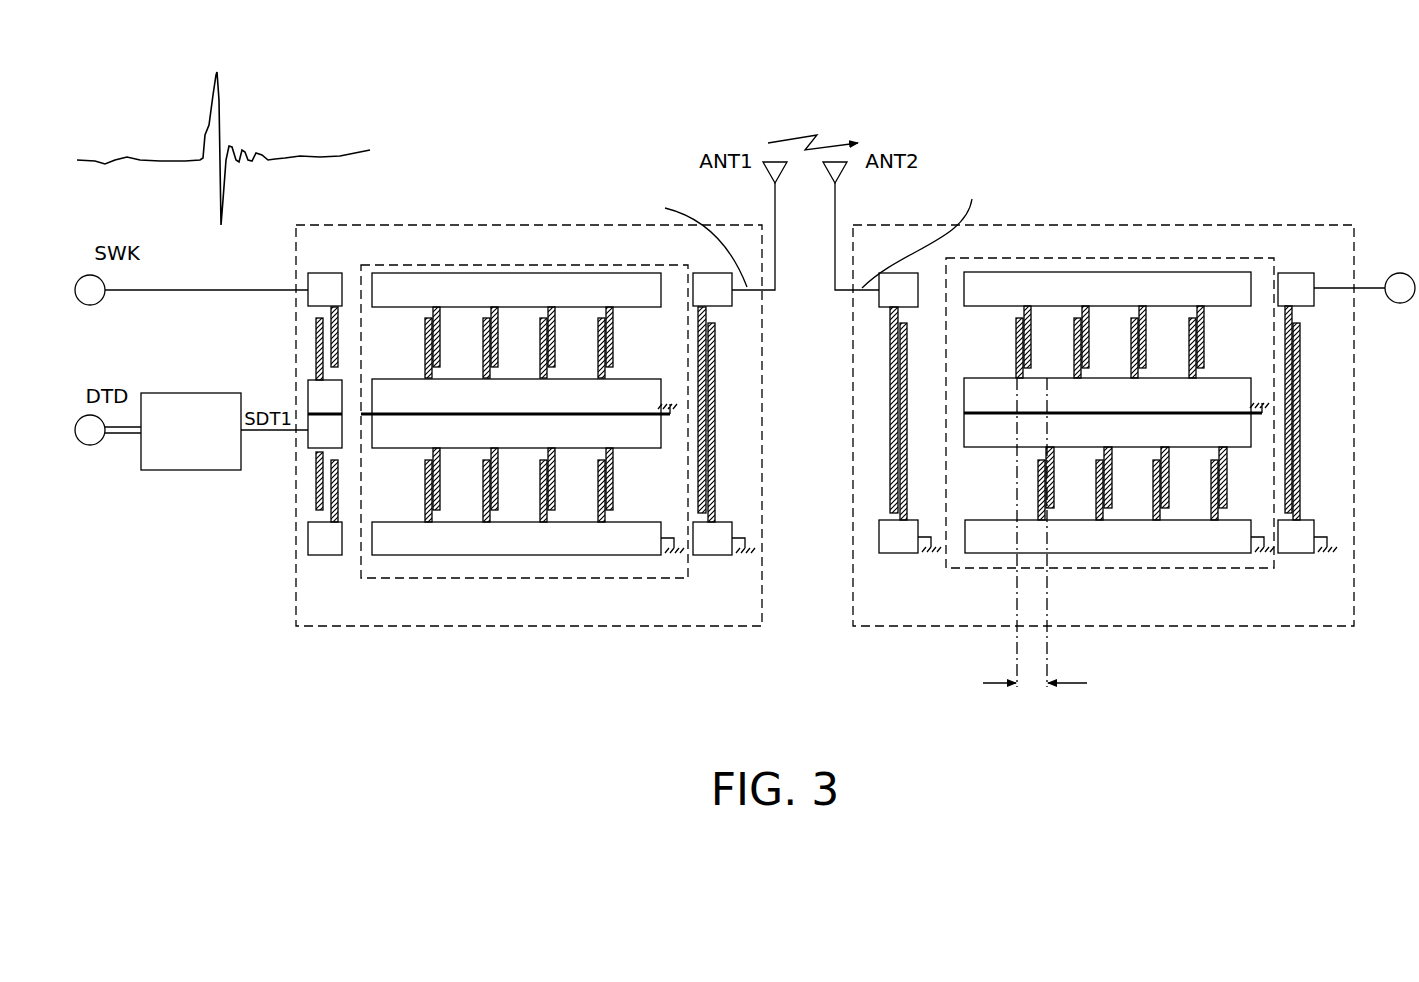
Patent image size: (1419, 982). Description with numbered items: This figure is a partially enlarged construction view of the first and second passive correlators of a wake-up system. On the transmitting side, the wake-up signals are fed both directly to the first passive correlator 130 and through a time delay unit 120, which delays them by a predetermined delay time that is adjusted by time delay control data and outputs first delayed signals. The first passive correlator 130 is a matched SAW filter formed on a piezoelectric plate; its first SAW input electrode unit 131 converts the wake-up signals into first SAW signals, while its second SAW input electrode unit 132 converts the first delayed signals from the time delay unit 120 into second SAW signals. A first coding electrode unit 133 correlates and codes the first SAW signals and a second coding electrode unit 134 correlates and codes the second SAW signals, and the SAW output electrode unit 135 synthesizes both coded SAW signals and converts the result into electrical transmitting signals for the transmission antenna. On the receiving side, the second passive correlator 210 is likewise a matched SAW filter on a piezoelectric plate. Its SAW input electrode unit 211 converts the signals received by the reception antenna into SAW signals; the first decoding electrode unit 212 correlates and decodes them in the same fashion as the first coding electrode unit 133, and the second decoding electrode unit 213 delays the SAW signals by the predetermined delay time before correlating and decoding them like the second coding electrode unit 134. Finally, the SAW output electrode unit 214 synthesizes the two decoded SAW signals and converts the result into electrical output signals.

The time delay unit 120 is at (188, 393).
The first passive correlator 130 is at (430, 225).
The first SAW input electrode unit 131 is at (323, 290).
The second SAW input electrode unit 132 is at (316, 495).
The first coding electrode unit 133 is at (548, 284).
The second coding electrode unit 134 is at (495, 558).
The SAW output electrode unit 135 is at (716, 445).
The second passive correlator 210 is at (1138, 225).
The SAW input electrode unit 211 is at (893, 482).
The first decoding electrode unit 212 is at (1065, 283).
The second decoding electrode unit 213 is at (1137, 545).
The SAW output electrode unit 214 is at (1295, 285).